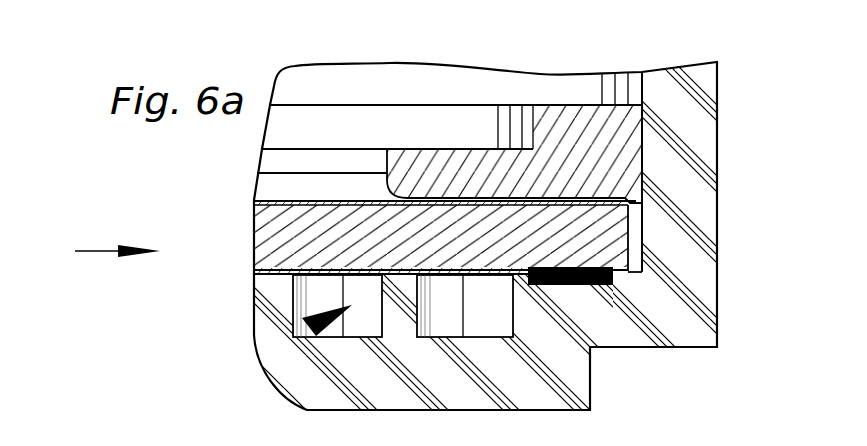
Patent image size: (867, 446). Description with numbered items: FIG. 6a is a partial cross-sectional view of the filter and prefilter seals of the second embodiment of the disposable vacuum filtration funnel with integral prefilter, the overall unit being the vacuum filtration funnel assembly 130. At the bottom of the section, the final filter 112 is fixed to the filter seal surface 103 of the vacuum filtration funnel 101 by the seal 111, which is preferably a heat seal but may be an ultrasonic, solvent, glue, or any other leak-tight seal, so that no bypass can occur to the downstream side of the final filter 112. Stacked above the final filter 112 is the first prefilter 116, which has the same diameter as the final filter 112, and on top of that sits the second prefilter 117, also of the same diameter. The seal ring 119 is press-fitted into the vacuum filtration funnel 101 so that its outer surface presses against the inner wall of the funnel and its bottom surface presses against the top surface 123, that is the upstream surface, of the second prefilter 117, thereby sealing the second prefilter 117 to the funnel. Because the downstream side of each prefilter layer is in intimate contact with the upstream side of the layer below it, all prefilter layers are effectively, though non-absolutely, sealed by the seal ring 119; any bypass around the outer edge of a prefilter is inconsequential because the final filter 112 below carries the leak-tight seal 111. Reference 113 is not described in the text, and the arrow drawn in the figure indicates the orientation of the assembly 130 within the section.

The vacuum filtration funnel 101 is at (707, 112).
The filter seal surface 103 is at (628, 273).
The seal 111 is at (545, 287).
The final filter 112 is at (255, 275).
The channels / recesses 113 is at (306, 323).
The first prefilter 116 is at (612, 245).
The second prefilter 117 is at (255, 200).
The seal ring 119 is at (612, 173).
The top surface of second prefilter 123 is at (337, 197).
The vacuum filtration funnel assembly 130 is at (94, 253).